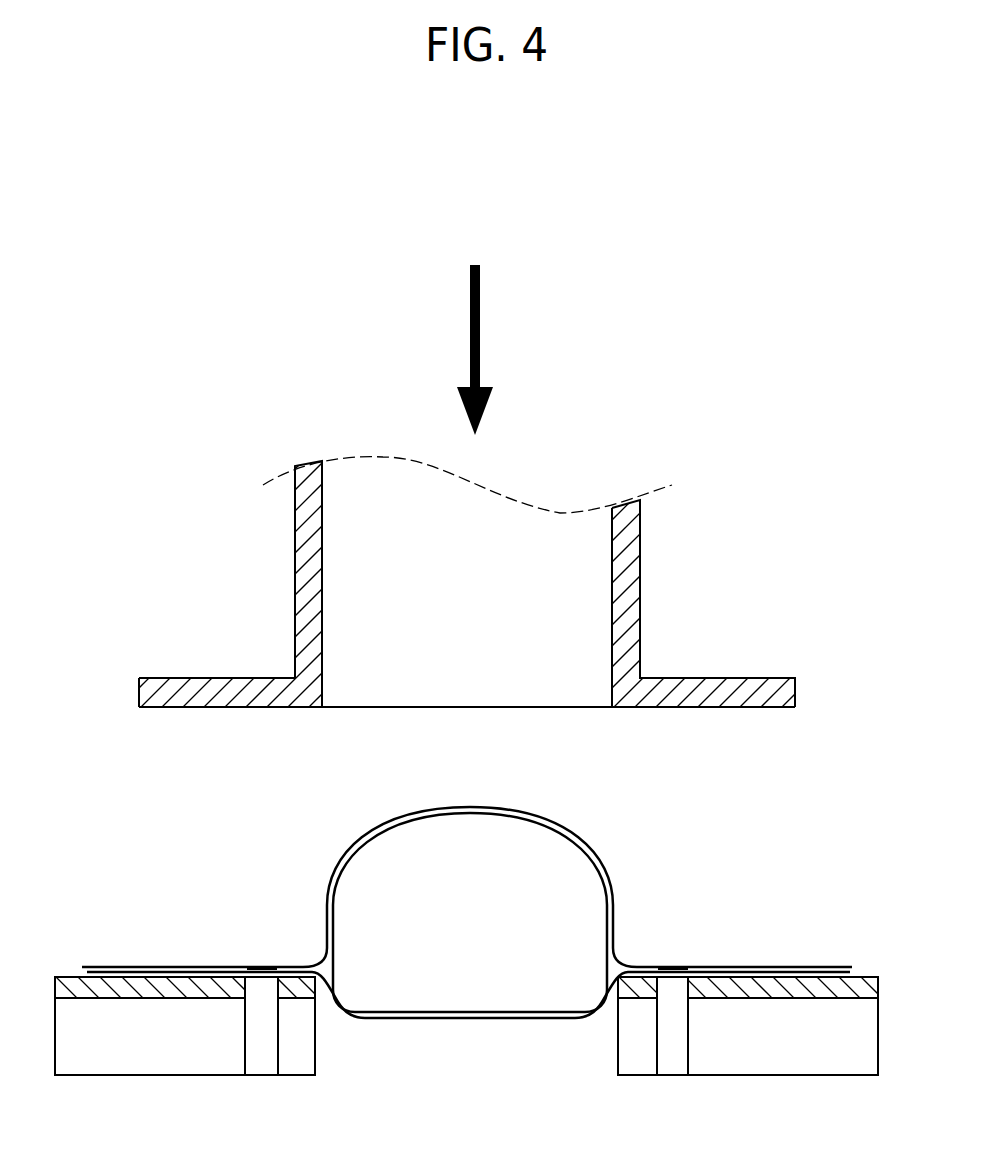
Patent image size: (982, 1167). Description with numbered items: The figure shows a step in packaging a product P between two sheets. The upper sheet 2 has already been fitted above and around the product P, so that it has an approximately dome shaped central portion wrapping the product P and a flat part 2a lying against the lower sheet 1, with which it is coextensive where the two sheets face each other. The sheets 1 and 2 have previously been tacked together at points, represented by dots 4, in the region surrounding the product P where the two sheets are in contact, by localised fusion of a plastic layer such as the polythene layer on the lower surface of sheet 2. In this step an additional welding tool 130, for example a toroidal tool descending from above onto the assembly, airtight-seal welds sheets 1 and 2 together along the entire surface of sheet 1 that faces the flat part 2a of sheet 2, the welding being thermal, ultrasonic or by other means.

The additional welding tool 130 is at (640, 615).
The sheet 2 is at (388, 830).
The flat part 2a is at (150, 967).
The sheet 1 is at (528, 1020).
The product P is at (523, 880).
The dots 4 is at (267, 967).